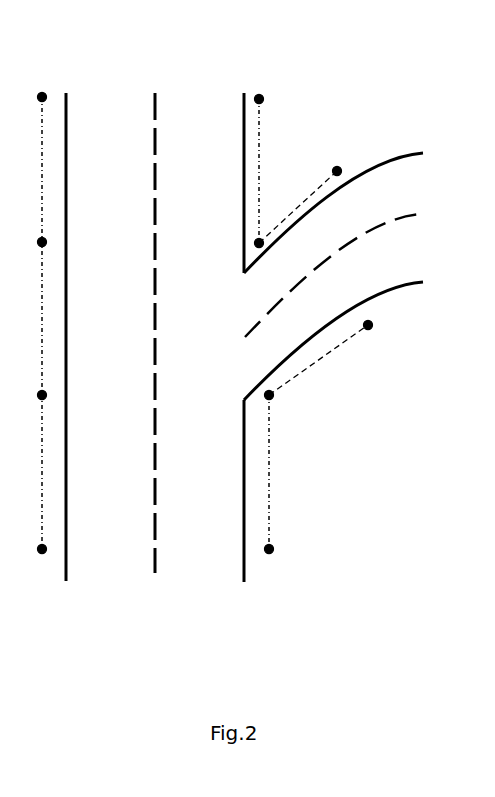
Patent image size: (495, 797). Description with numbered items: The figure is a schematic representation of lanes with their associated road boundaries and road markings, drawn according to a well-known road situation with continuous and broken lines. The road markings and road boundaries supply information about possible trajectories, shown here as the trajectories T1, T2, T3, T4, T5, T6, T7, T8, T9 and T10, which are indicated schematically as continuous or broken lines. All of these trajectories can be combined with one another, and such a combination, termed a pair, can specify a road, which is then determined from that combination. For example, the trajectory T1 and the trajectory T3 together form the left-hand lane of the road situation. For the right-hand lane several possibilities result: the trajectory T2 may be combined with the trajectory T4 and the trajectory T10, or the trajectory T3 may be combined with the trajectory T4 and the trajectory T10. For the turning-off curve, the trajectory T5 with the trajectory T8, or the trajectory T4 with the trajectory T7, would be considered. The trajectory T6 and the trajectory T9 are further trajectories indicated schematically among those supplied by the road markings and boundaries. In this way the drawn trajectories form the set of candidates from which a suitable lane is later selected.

The trajectory T1 is at (39, 295).
The trajectory T2 is at (64, 364).
The trajectory T3 is at (152, 364).
The trajectory T4 is at (325, 459).
The trajectory T5 is at (338, 434).
The trajectory T6 is at (353, 272).
The trajectory T7 is at (352, 207).
The trajectory T8 is at (303, 189).
The trajectory T9 is at (274, 161).
The trajectory T10 is at (240, 154).